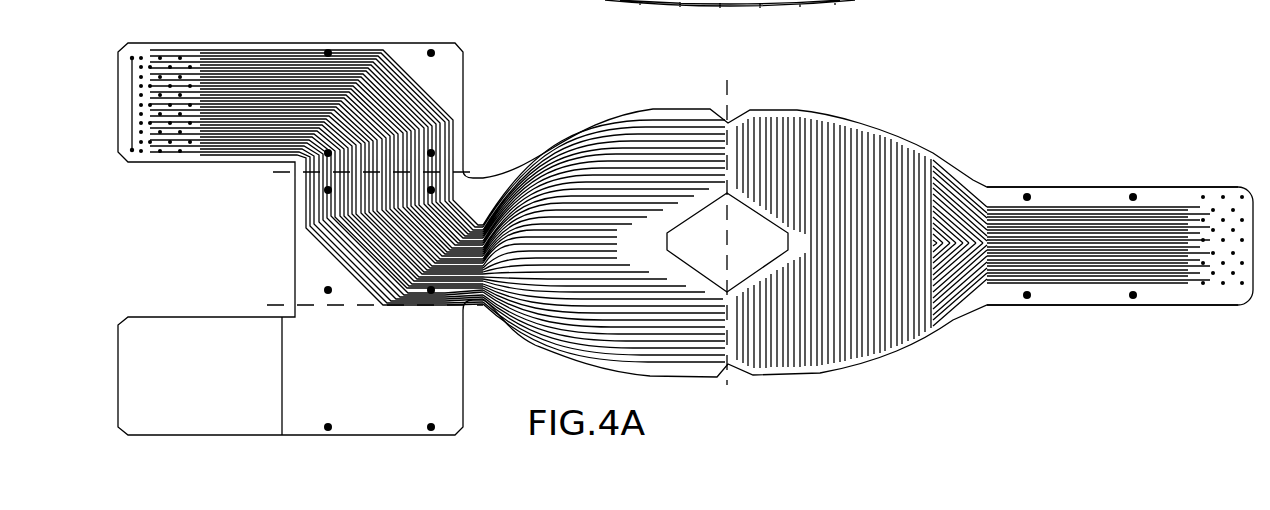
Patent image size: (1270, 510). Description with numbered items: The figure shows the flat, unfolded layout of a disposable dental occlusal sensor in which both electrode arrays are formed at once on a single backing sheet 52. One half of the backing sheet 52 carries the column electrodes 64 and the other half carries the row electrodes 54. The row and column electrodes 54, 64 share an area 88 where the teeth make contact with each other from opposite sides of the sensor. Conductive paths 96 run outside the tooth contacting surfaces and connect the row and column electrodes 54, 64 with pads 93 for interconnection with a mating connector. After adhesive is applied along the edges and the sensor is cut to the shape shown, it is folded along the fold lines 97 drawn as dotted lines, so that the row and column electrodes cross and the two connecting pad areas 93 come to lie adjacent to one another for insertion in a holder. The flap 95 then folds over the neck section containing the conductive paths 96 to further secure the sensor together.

The backing sheet 52 is at (1060, 186).
The row electrodes 54 is at (873, 86).
The column electrodes 64 is at (585, 110).
The tooth contact area 88 is at (762, 258).
The connecting pads 93 is at (177, 26).
The flap 95 is at (207, 388).
The conductive paths 96 is at (367, 270).
The fold lines 97 is at (263, 170).